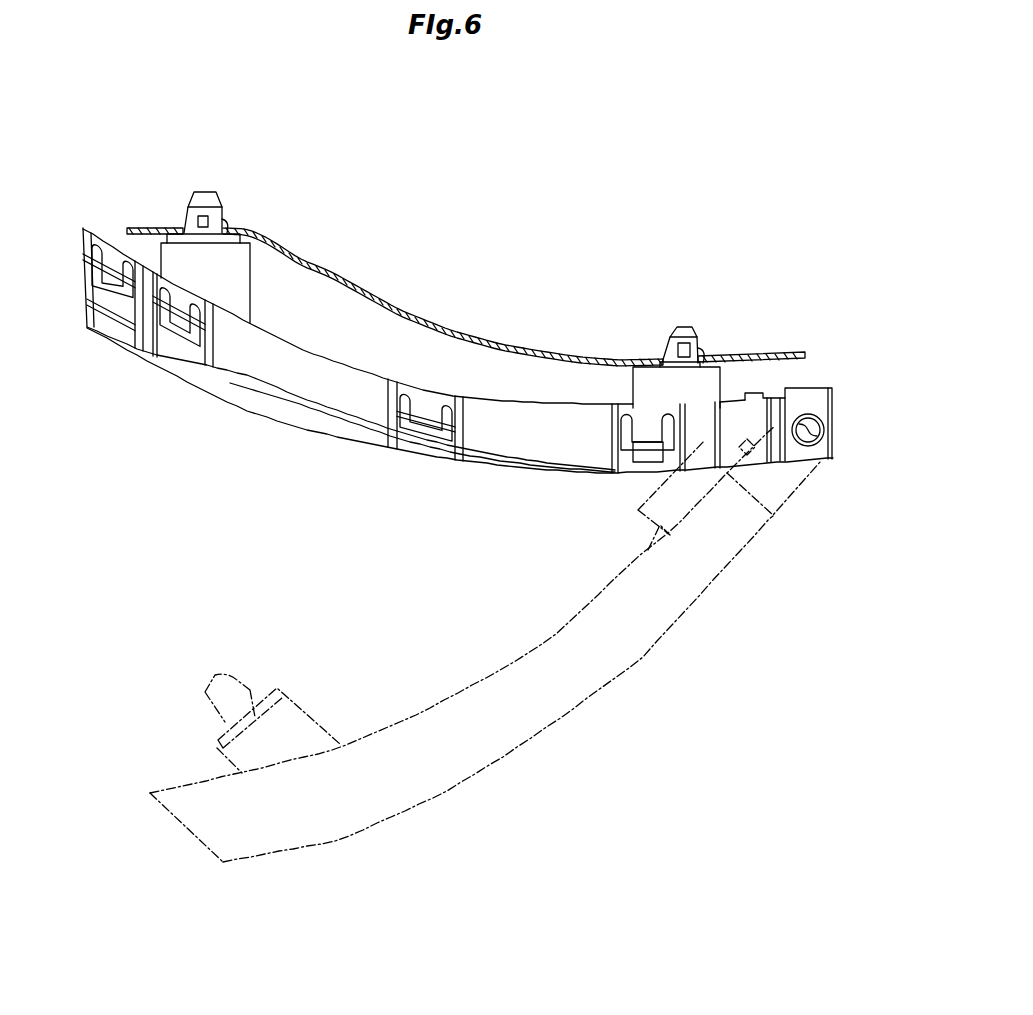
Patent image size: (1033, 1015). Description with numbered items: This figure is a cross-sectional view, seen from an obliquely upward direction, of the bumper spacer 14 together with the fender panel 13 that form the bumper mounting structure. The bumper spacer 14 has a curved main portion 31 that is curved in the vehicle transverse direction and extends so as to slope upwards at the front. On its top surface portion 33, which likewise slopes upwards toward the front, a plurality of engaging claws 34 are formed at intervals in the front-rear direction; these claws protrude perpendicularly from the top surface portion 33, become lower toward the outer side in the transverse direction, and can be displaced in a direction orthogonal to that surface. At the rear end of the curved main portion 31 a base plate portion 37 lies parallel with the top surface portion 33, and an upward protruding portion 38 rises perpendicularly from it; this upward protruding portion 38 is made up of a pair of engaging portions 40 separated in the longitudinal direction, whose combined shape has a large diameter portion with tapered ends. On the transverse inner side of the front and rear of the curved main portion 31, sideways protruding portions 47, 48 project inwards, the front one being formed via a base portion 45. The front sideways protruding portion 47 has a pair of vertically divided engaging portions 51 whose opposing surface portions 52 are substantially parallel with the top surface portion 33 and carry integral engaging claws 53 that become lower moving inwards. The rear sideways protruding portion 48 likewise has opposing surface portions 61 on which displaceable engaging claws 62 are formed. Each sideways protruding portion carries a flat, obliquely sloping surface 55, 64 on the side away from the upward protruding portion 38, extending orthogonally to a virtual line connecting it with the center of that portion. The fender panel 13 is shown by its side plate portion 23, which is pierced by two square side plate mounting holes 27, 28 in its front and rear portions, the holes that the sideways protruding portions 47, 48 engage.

The fender panel 13 is at (809, 346).
The bumper spacer 14 is at (458, 389).
The side plate portion 23 is at (400, 306).
The side plate mounting hole 27 is at (226, 224).
The side plate mounting hole 28 is at (698, 348).
The curved main portion 31 is at (247, 414).
The top surface portion 33 is at (343, 406).
The engaging claws 34 is at (115, 283).
The base plate portion 37 is at (804, 417).
The upward protruding portion 38 is at (831, 410).
The engaging portions 40 is at (808, 412).
The base portion 45 is at (238, 292).
The sideways protruding portion 47 is at (230, 441).
The sideways protruding portion 48 is at (650, 388).
The engaging portions 51 is at (203, 190).
The surface portions 52 is at (188, 213).
The engaging claws 53 is at (210, 217).
The obliquely sloping surface 55 is at (192, 207).
The surface portions 61 is at (667, 352).
The engaging claws 62 is at (685, 342).
The obliquely sloping surface 64 is at (668, 332).